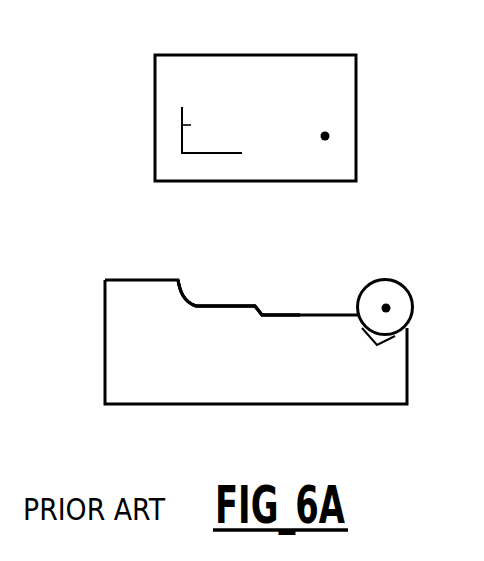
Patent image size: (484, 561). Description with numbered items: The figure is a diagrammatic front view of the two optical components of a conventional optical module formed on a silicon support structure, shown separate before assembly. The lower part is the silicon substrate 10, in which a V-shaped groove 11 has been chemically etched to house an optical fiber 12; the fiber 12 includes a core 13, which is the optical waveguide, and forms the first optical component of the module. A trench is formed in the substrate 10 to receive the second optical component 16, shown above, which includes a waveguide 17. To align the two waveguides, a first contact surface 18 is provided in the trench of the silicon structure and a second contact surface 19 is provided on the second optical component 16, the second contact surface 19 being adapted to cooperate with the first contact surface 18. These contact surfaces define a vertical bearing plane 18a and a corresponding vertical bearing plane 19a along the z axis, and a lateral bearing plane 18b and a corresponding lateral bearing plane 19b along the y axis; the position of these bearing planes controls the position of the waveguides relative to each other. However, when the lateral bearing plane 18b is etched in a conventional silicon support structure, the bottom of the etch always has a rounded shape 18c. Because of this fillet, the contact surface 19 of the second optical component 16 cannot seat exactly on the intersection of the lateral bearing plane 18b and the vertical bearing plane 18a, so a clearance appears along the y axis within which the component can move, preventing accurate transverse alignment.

The silicon substrate 10 is at (122, 390).
The V-shaped groove 11 is at (386, 338).
The optical fiber 12 is at (405, 308).
The core 13 is at (388, 304).
The second optical component 16 is at (352, 100).
The waveguide 17 is at (329, 136).
The first contact surface 18 is at (217, 286).
The vertical bearing plane 18a is at (243, 305).
The lateral bearing plane 18b is at (182, 287).
The rounded shape 18c is at (188, 308).
The second contact surface 19 is at (177, 125).
The vertical bearing plane 19a is at (228, 153).
The lateral bearing plane 19b is at (191, 124).